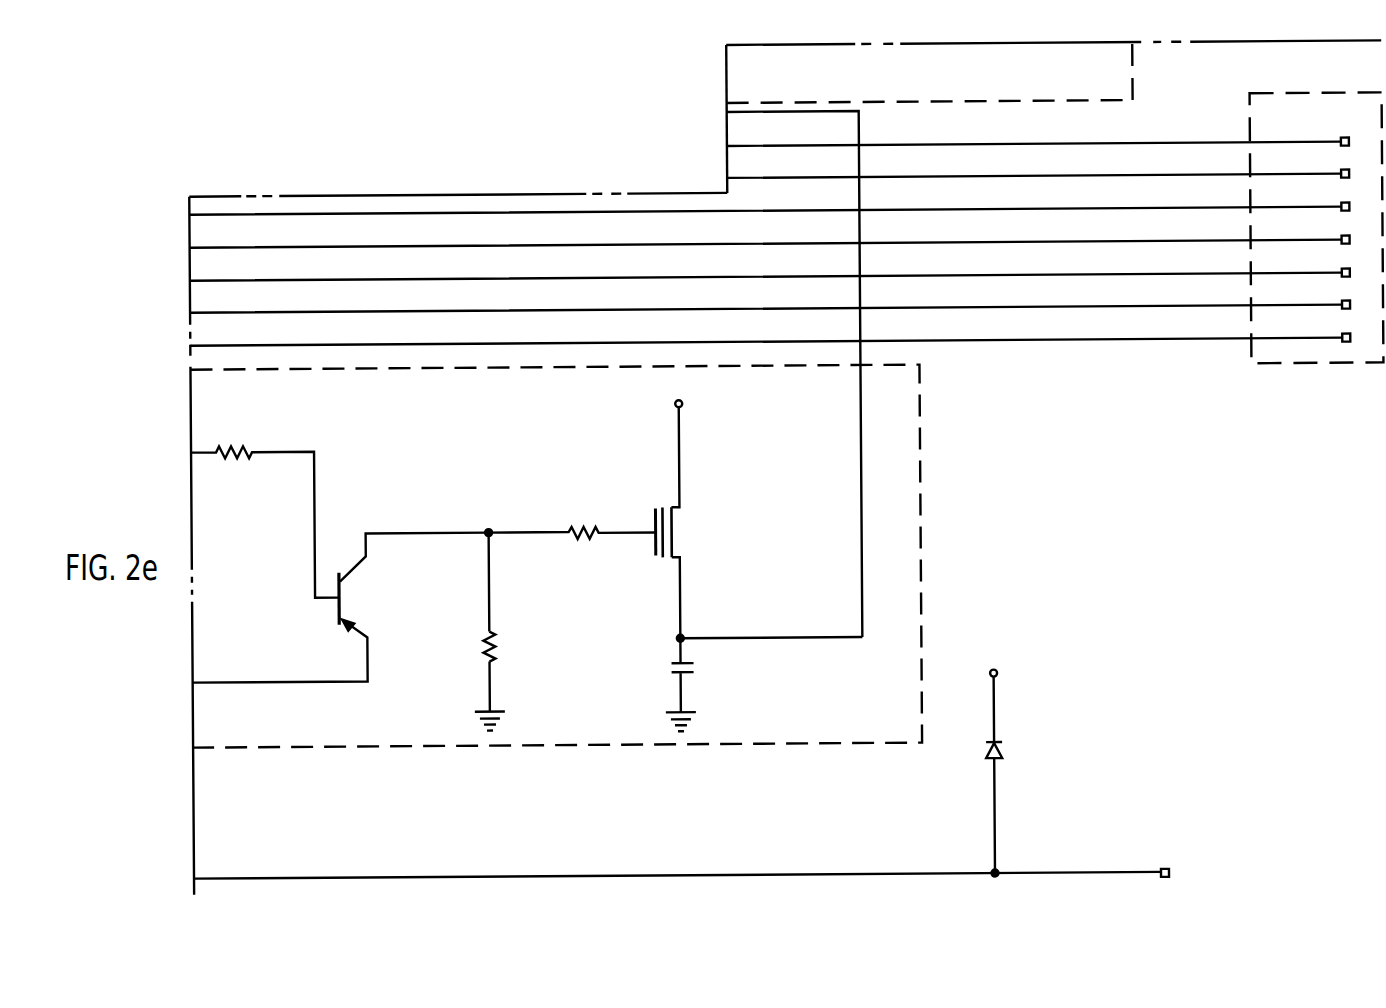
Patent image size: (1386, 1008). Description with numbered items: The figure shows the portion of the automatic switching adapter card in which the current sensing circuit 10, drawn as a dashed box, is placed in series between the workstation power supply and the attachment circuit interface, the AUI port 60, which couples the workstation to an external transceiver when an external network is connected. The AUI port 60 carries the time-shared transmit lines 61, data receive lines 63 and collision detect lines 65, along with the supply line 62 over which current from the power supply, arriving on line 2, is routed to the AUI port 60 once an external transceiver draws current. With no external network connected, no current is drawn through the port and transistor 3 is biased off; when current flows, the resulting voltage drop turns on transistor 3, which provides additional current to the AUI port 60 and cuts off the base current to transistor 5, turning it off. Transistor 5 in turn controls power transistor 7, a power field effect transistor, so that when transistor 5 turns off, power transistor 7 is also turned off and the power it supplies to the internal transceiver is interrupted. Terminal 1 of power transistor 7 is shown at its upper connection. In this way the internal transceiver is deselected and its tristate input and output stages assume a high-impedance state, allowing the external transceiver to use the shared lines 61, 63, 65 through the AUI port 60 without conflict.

The attachment circuit interface (AUI port) 60 is at (785, 226).
The transmit lines 61 is at (1155, 160).
The data receive lines 63 is at (1205, 222).
The collision detect lines 65 is at (1153, 293).
The line 62 is at (1064, 329).
The current sensing circuit 10 is at (915, 438).
The transistor 5 is at (353, 596).
The power transistor 7 is at (687, 519).
The drain terminal 1 is at (685, 453).
The line 2 is at (646, 531).
The transistor 3 is at (687, 597).